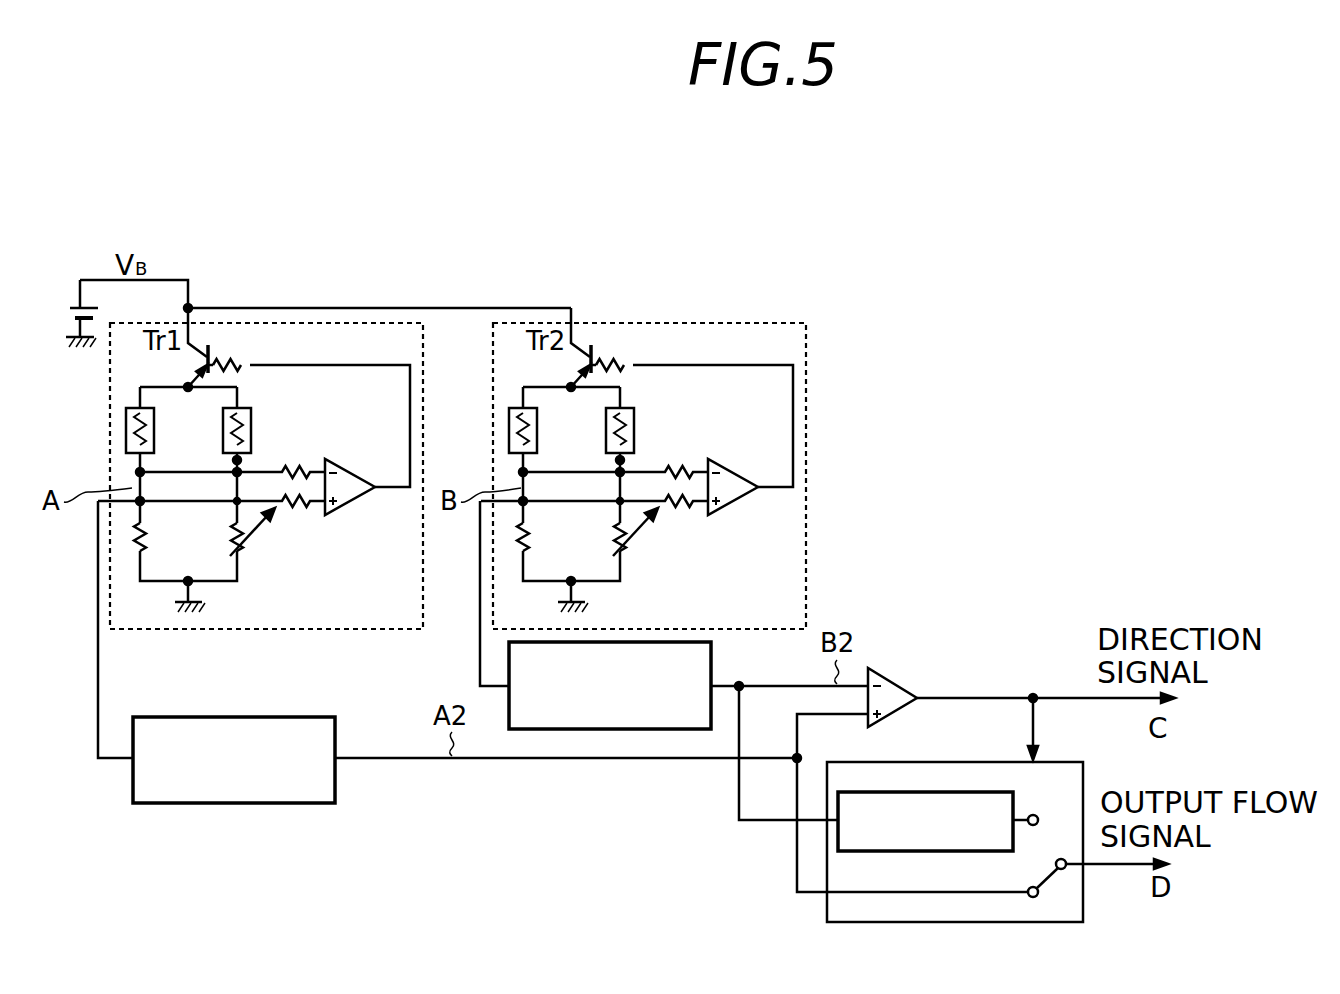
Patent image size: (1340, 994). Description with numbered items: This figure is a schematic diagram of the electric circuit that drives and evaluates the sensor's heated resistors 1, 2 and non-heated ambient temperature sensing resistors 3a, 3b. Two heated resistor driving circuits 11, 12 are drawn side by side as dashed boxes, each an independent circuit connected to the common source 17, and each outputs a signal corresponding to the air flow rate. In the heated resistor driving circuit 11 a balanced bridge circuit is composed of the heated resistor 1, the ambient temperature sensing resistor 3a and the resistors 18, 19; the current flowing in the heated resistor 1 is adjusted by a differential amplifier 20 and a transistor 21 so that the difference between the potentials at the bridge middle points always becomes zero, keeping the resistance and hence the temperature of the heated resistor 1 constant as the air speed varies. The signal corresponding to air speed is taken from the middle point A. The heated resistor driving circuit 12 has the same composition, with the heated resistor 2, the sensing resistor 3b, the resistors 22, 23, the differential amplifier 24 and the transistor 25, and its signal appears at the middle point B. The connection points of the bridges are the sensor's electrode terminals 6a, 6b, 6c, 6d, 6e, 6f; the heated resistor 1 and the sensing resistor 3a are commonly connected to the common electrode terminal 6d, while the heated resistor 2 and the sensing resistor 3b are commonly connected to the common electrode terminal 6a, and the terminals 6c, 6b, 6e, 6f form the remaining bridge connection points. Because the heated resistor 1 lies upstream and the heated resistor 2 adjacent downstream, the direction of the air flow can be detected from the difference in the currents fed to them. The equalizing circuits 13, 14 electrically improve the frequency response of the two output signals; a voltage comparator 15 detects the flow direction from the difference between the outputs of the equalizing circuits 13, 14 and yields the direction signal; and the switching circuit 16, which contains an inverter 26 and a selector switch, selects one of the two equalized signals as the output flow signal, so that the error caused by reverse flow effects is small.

The heated resistor 1 is at (154, 436).
The heated resistor 2 is at (546, 431).
The non-heated ambient temperature sensing resistor 3a is at (222, 448).
The non-heated ambient temperature sensing resistor 3b is at (591, 447).
The common electrode terminal 6a is at (538, 376).
The electrode terminal 6b is at (489, 453).
The common electrode terminal 6c is at (138, 472).
The common electrode terminal 6d is at (186, 386).
The electrode terminal 6e is at (239, 458).
The electrode terminal 6f is at (665, 452).
The heated resistor driving circuit 11 is at (320, 319).
The heated resistor driving circuit 12 is at (649, 442).
The equalizing circuit 13 is at (337, 735).
The equalizing circuit 14 is at (713, 660).
The voltage comparator 15 is at (896, 684).
The switching circuit 16 is at (997, 818).
The source 17 is at (80, 306).
The resistor 18 is at (154, 538).
The resistor 19 is at (250, 540).
The differential amplifier 20 is at (350, 508).
The transistor 21 is at (228, 370).
The resistor 22 is at (555, 536).
The resistor 23 is at (652, 532).
The differential amplifier 24 is at (744, 508).
The transistor 25 is at (643, 375).
The inverter 26 is at (1002, 790).